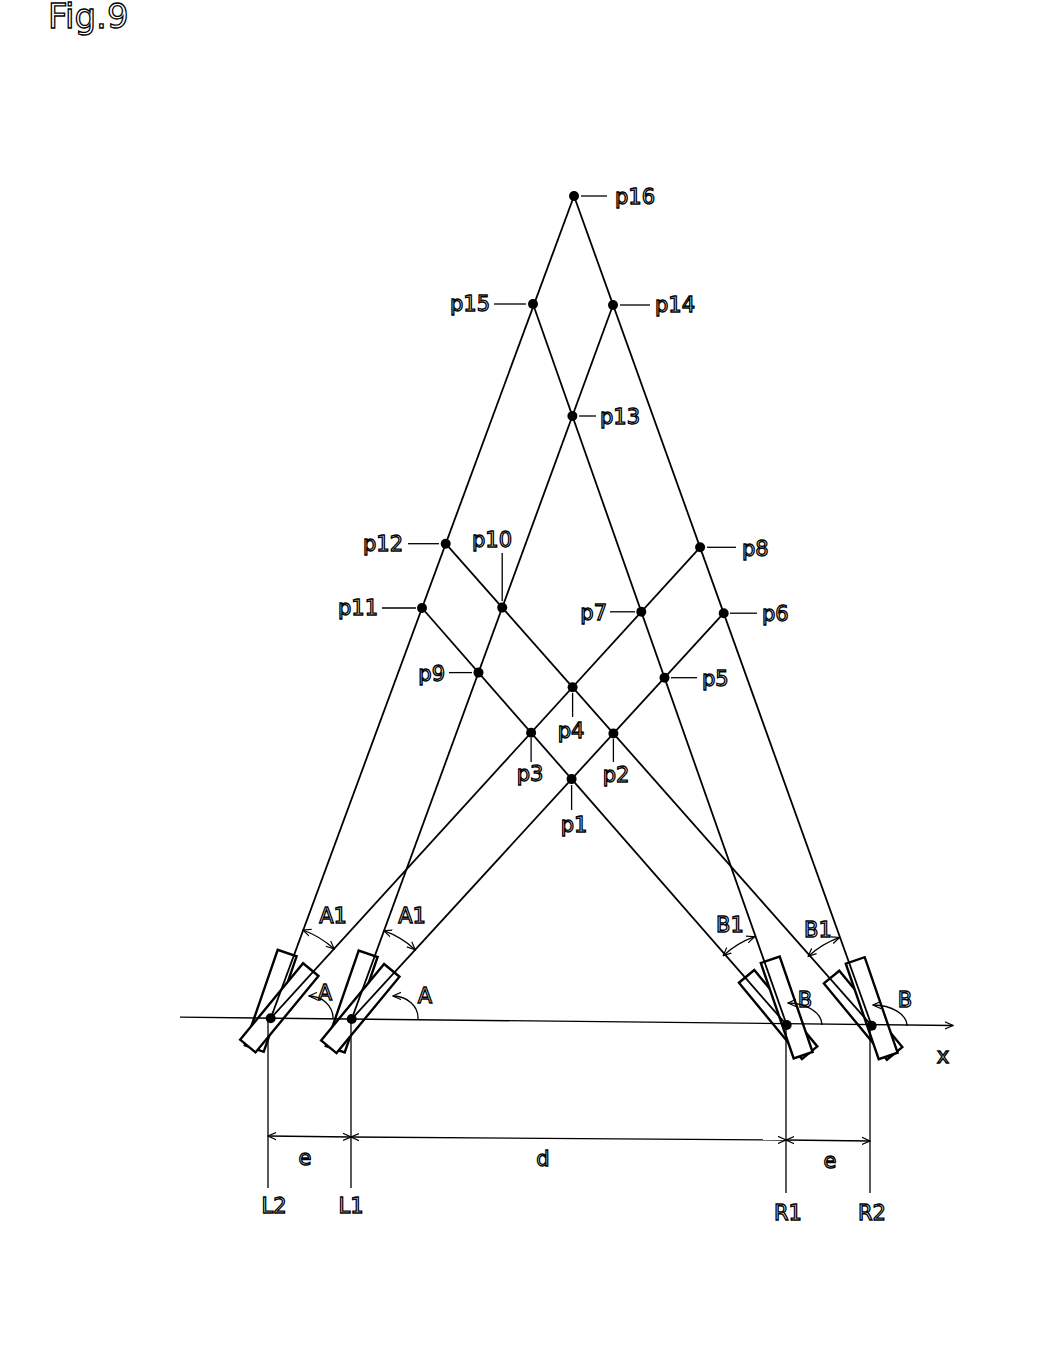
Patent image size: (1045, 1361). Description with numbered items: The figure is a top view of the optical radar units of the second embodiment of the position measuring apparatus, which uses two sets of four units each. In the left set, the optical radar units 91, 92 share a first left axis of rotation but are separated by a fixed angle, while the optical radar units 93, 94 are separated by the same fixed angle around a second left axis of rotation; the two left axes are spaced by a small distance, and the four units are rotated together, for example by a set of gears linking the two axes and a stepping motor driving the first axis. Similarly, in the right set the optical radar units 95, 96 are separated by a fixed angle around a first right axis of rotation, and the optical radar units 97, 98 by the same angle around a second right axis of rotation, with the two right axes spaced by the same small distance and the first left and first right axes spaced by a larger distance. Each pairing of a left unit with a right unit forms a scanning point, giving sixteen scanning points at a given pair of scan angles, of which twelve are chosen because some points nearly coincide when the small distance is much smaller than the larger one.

The optical radar unit 91 is at (373, 997).
The optical radar unit 92 is at (362, 978).
The optical radar unit 93 is at (280, 1000).
The optical radar unit 94 is at (290, 965).
The optical radar unit 95 is at (752, 985).
The optical radar unit 96 is at (752, 983).
The optical radar unit 97 is at (852, 1000).
The optical radar unit 98 is at (850, 962).